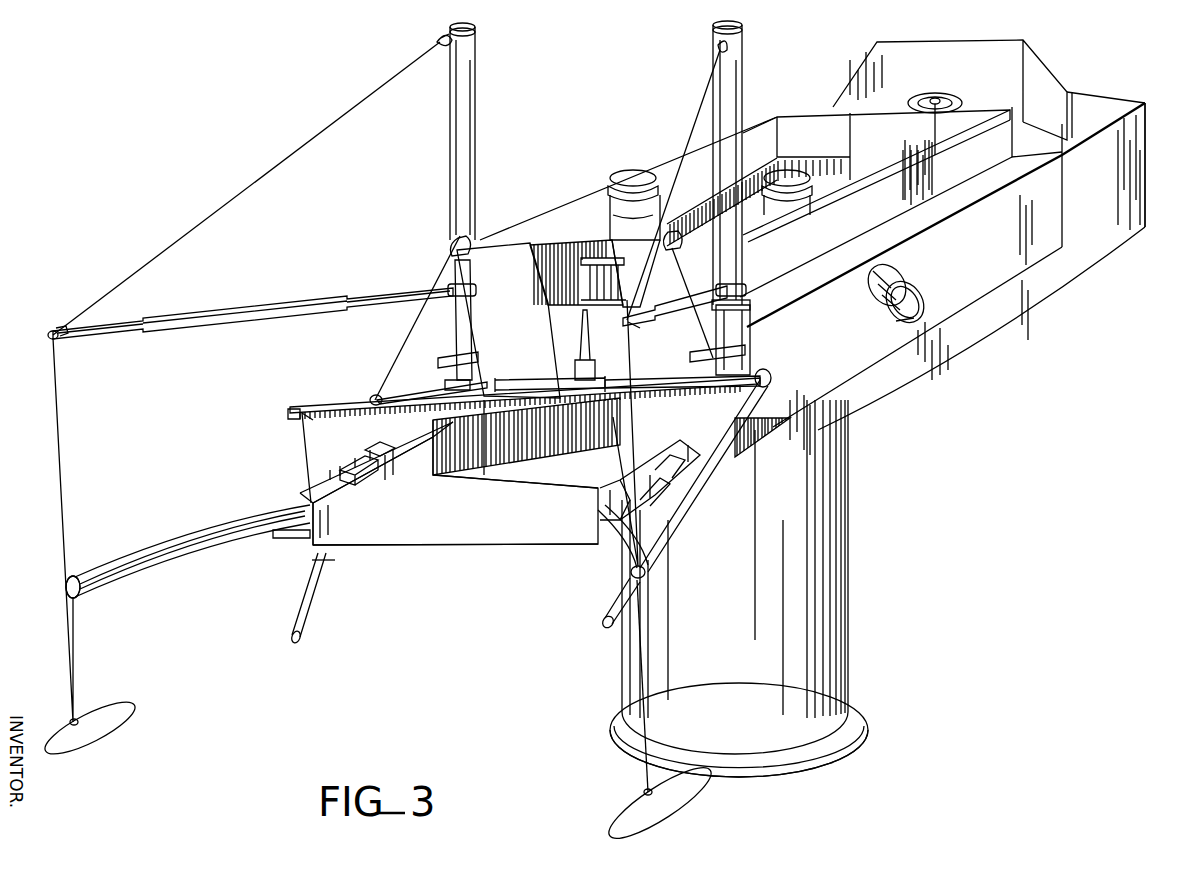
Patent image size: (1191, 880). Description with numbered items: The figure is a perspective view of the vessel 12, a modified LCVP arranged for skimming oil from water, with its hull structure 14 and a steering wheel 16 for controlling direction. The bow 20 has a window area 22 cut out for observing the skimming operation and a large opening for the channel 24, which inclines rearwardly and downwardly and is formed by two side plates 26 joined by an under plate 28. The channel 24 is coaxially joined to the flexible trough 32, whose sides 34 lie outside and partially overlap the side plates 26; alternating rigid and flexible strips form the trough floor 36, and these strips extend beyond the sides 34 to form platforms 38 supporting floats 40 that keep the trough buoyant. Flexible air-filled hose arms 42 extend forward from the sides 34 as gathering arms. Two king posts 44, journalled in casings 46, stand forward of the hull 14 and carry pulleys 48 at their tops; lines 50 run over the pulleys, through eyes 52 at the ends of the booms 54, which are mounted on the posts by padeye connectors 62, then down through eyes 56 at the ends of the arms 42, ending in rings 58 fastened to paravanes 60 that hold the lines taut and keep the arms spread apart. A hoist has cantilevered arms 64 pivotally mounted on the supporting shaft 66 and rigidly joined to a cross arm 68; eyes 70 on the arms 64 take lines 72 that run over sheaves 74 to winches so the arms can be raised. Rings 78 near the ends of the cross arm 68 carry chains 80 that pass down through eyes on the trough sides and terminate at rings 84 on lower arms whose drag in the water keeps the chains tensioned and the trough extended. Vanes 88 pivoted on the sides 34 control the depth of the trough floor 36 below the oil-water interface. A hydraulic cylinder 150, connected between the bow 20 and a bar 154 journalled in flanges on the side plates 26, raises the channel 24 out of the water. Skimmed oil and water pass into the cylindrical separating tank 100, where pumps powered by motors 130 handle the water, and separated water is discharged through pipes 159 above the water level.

The vessel 12 is at (946, 392).
The hull structure 14 is at (1149, 168).
The steering wheel 16 is at (958, 95).
The bow 20 is at (507, 320).
The window area 22 is at (545, 262).
The channel 24 is at (526, 436).
The side plates 26 is at (752, 440).
The under plate 28 is at (530, 455).
The flexible trough 32 is at (420, 548).
The trough sides 34 is at (375, 458).
The trough floor 36 is at (455, 482).
The platforms 38 is at (680, 508).
The floats 40 is at (358, 455).
The flexible arms 42 is at (145, 545).
The king posts 44 is at (477, 115).
The casings 46 is at (752, 305).
The pulleys 48 is at (436, 43).
The lines 50 is at (182, 227).
The eyes 52 is at (48, 333).
The booms 54 is at (262, 306).
The eyes 56 is at (66, 586).
The rings 58 is at (70, 718).
The paravanes 60 is at (98, 738).
The padeye connectors 62 is at (450, 286).
The cantilevered arms 64 is at (425, 393).
The supporting shaft 66 is at (560, 380).
The cross arm 68 is at (300, 406).
The eyes 70 is at (371, 398).
The lines 72 is at (402, 348).
The sheaves 74 is at (455, 242).
The rings 78 is at (290, 416).
The chains 80 is at (304, 468).
The rings 84 is at (312, 626).
The vanes 88 is at (662, 528).
The separating tank 100 is at (850, 615).
The motors 130 is at (612, 182).
The hydraulic cylinder 150 is at (578, 355).
The bar 154 is at (486, 428).
The pipes 159 is at (918, 288).